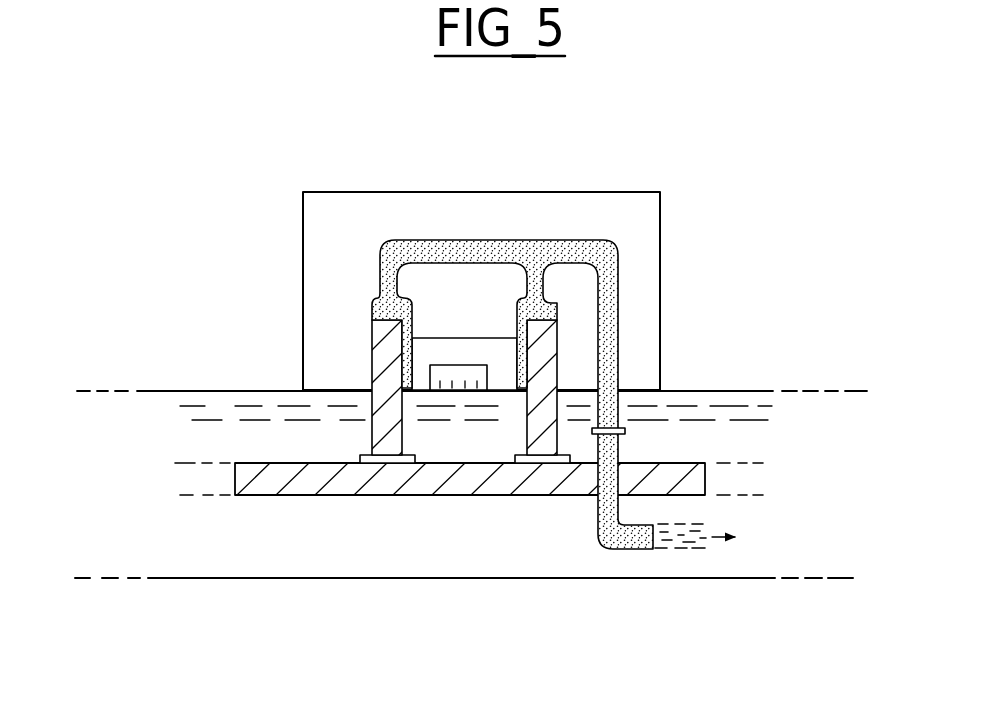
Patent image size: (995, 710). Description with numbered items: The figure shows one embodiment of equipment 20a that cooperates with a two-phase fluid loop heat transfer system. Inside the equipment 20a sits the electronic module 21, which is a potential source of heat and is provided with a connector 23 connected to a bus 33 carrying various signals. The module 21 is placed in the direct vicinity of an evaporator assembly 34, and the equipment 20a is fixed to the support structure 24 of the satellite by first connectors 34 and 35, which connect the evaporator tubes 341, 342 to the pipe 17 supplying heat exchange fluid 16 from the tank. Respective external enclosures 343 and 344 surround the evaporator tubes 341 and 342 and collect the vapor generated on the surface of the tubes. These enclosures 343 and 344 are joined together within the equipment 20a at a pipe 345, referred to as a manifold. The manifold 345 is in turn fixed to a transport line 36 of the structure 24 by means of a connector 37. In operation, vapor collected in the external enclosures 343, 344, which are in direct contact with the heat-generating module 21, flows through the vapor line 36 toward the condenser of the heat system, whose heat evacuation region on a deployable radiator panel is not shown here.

The equipment 20a is at (458, 190).
The manifold 345 is at (580, 240).
The evaporator assembly 34 is at (471, 342).
The external enclosure 343 is at (370, 307).
The external enclosure 344 is at (545, 300).
The evaporator tube 341 is at (377, 413).
The evaporator tube 342 is at (543, 372).
The bus 33 is at (230, 407).
The electronic module 21 is at (433, 338).
The connector 23 is at (470, 365).
The first connector 35 is at (515, 457).
The connector 37 is at (625, 432).
The transport line 36 is at (598, 527).
The heat exchange fluid 16 is at (377, 485).
The pipe 17 is at (280, 487).
The support structure 24 is at (563, 578).